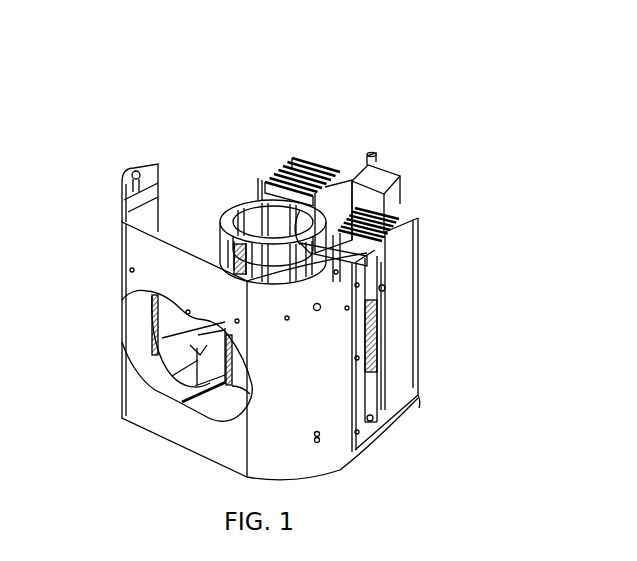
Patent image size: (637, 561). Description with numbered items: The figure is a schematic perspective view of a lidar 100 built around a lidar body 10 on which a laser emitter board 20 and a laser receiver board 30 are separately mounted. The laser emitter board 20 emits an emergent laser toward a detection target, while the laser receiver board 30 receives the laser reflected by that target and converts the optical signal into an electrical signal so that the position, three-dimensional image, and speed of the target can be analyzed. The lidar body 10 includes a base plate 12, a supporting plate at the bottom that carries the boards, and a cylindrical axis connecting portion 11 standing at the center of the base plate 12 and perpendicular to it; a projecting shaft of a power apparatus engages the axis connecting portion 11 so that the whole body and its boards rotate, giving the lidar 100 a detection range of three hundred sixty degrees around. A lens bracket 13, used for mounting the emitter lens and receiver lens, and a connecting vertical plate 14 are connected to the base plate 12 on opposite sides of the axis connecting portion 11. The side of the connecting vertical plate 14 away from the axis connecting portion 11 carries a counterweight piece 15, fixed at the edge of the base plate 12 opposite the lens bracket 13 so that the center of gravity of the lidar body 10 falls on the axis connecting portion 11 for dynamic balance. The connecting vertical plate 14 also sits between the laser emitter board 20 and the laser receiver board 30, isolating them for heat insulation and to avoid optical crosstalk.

The lidar 100 is at (213, 33).
The lidar body 10 is at (112, 154).
The axis connecting portion 11 is at (220, 212).
The base plate 12 is at (398, 415).
The lens bracket 13 is at (121, 366).
The connecting vertical plate 14 is at (347, 180).
The counterweight piece 15 is at (402, 178).
The laser emitter board 20 is at (402, 320).
The laser receiver board 30 is at (295, 160).